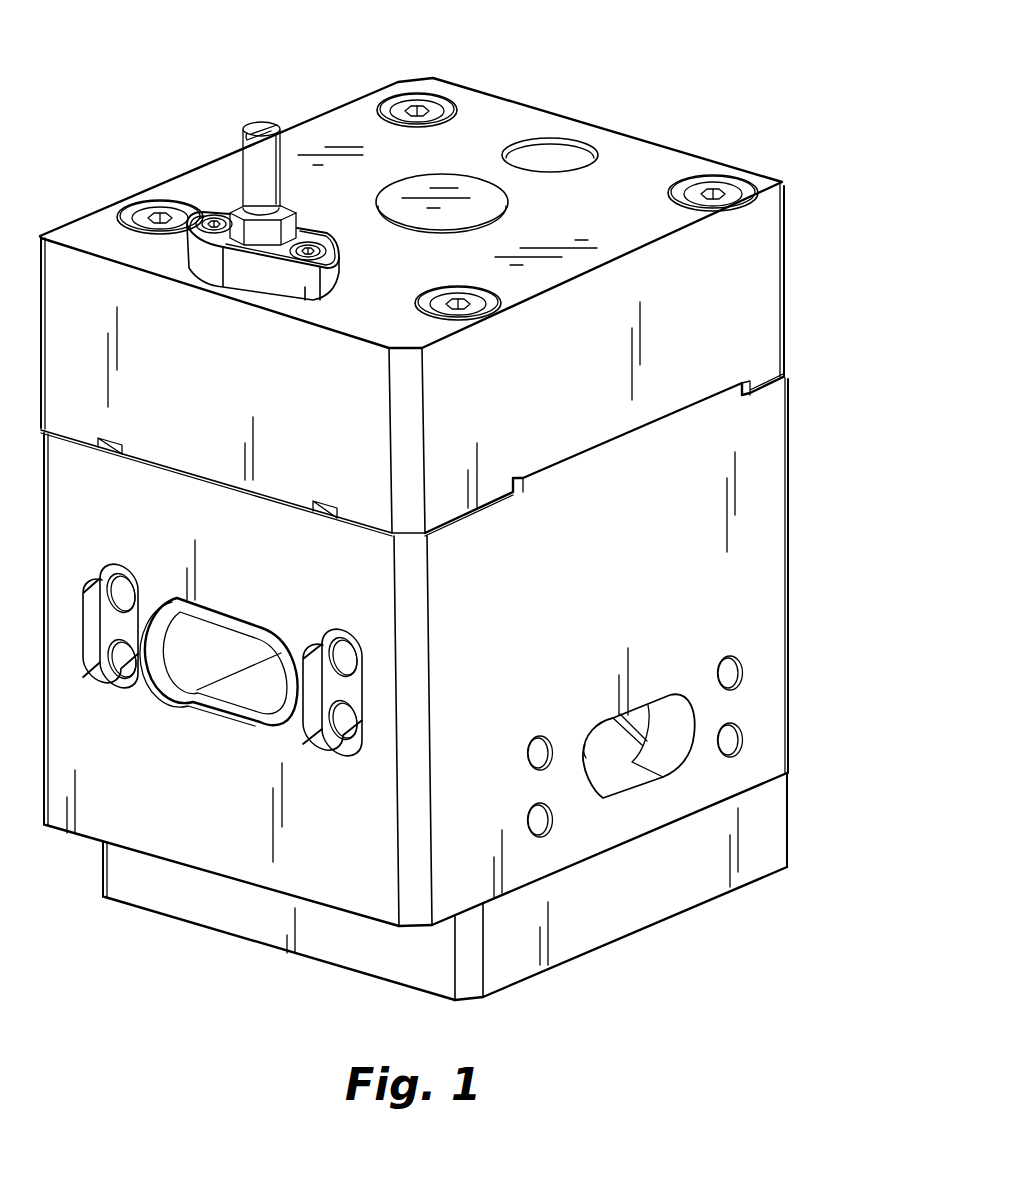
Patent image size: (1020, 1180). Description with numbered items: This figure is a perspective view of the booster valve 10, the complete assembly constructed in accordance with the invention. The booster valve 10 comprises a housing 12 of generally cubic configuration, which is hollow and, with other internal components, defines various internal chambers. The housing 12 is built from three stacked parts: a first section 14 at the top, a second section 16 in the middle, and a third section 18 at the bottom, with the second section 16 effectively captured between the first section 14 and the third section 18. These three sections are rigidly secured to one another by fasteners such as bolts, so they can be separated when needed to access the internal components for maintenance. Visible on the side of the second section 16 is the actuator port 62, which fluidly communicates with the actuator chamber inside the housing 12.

The booster valve 10 is at (605, 74).
The housing 12 is at (140, 180).
The first section 14 is at (767, 298).
The second section 16 is at (767, 527).
The third section 18 is at (627, 895).
The actuator port 62 is at (235, 688).